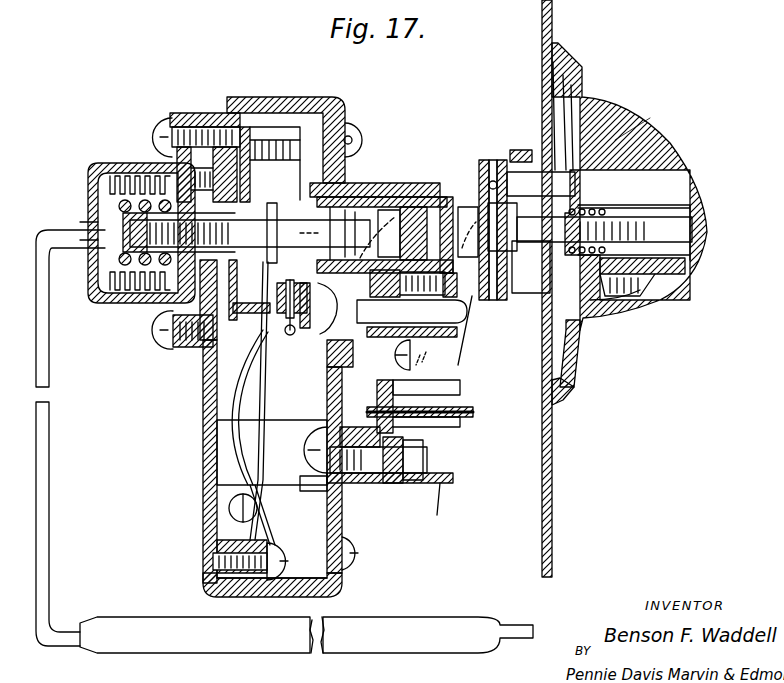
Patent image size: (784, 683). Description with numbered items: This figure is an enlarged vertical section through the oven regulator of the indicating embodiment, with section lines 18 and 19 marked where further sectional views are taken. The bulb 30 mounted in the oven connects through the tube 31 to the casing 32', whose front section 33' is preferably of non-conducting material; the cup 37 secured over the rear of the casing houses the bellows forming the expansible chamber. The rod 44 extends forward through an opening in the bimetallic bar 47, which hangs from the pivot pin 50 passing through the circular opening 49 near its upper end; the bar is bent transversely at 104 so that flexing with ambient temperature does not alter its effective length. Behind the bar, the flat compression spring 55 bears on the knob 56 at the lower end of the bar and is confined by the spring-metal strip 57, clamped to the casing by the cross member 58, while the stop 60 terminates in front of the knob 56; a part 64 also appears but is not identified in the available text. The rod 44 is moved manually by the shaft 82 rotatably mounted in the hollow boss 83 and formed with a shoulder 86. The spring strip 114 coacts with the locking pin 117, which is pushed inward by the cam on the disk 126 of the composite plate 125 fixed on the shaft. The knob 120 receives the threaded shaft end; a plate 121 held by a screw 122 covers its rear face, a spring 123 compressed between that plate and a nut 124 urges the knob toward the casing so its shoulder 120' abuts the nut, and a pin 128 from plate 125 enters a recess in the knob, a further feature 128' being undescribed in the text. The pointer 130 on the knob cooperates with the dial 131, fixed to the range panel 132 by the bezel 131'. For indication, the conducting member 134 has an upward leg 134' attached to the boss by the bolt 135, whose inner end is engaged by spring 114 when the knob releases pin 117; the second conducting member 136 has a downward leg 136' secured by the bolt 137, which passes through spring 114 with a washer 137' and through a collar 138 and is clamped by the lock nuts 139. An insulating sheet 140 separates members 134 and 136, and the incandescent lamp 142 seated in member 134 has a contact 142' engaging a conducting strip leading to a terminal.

The section line 18 is at (150, 305).
The section line 19 is at (303, 45).
The bulb 30 is at (440, 620).
The tube 31 is at (47, 462).
The cap 32' is at (178, 208).
The front section of the casing 33' is at (365, 132).
The cup 37 is at (110, 170).
The rod 44 is at (345, 184).
The bimetallic bar 47 is at (318, 438).
The circular opening 49 is at (284, 212).
The pivot pin 50 is at (222, 112).
The compression spring 55 is at (212, 403).
The knob 56 is at (228, 515).
The strip of spring metal 57 is at (232, 387).
The cross member 58 is at (250, 577).
The stop 60 is at (352, 553).
The wall 64 is at (245, 300).
The shaft 82 is at (538, 255).
The hollow boss 83 is at (400, 195).
The shoulder 86 is at (465, 206).
The transverse bend 104 is at (247, 480).
The spring 114 is at (272, 452).
The pin 117 is at (365, 305).
The knob 120 is at (619, 337).
The shoulder 120' is at (663, 227).
The plate 121 is at (655, 150).
The screw 122 is at (620, 310).
The spring 123 is at (690, 165).
The nut 124 is at (690, 268).
The composite plate 125 is at (485, 158).
The disk 126 is at (493, 160).
The pin 128 is at (541, 159).
The rib 128' is at (644, 120).
The pointer 130 is at (590, 100).
The dial 131 is at (595, 353).
The bezel 131' is at (592, 392).
The panel 132 is at (552, 422).
The conducting member 134 is at (453, 390).
The leg 134' is at (453, 395).
The bolt 135 is at (323, 393).
The second conducting member 136 is at (458, 429).
The leg 136' is at (390, 487).
The bolt 137 is at (360, 471).
The washer 137' is at (314, 492).
The collar 138 is at (383, 483).
The lock nuts 139 is at (425, 455).
The sheet of insulating material 140 is at (476, 411).
The incandescent lamp 142 is at (448, 355).
The contact 142' is at (466, 499).